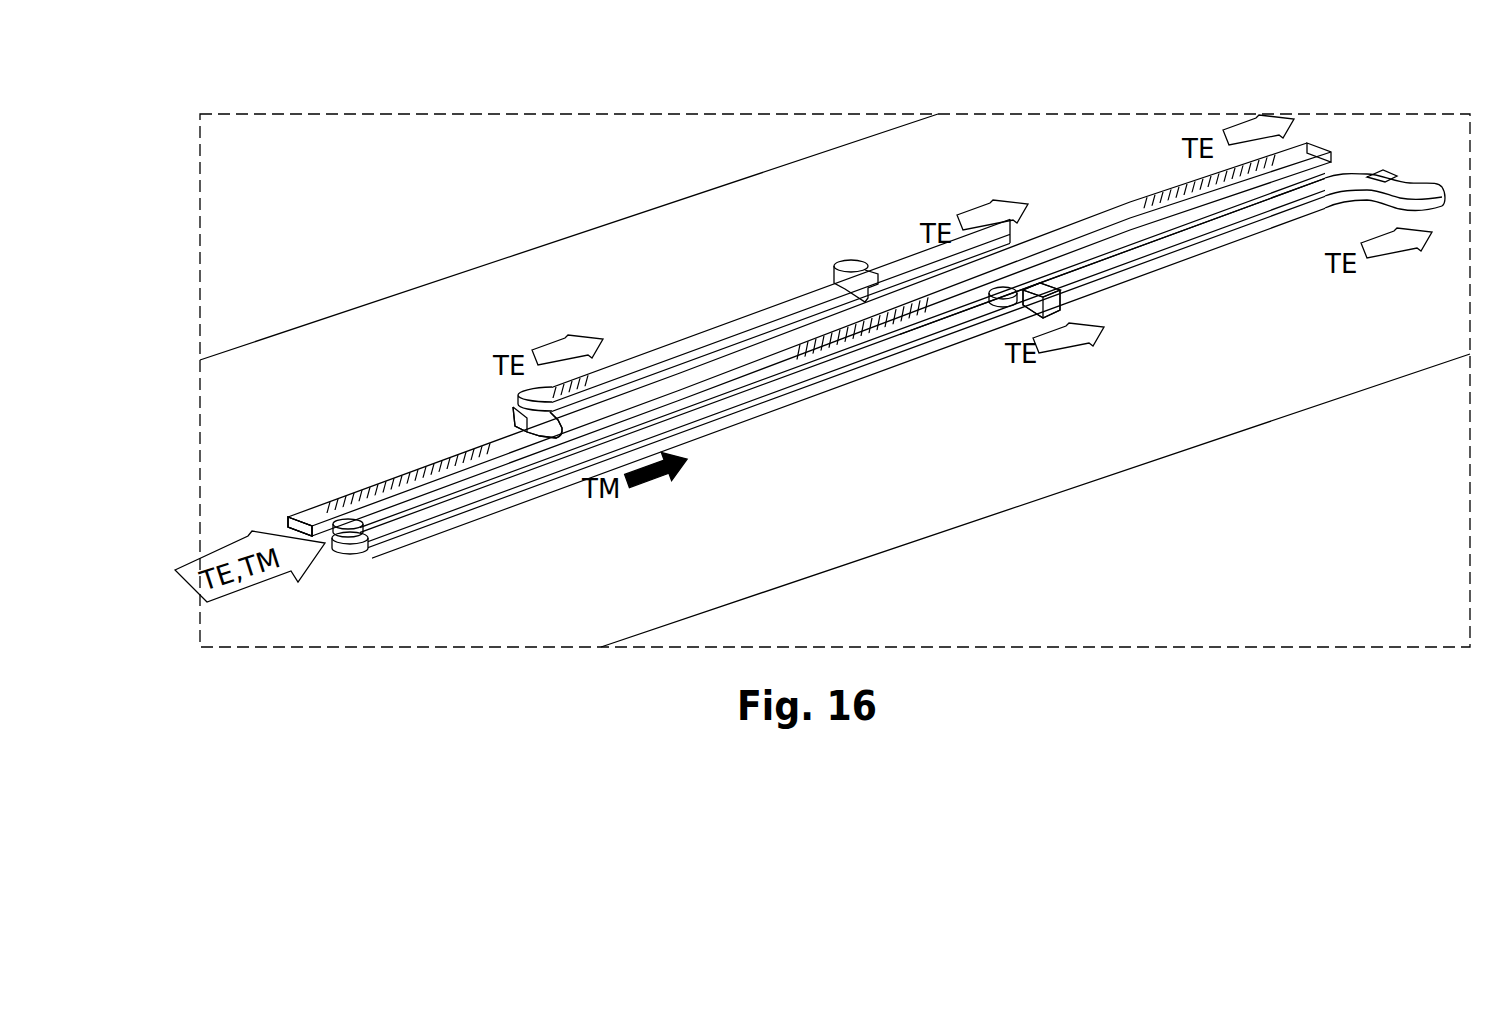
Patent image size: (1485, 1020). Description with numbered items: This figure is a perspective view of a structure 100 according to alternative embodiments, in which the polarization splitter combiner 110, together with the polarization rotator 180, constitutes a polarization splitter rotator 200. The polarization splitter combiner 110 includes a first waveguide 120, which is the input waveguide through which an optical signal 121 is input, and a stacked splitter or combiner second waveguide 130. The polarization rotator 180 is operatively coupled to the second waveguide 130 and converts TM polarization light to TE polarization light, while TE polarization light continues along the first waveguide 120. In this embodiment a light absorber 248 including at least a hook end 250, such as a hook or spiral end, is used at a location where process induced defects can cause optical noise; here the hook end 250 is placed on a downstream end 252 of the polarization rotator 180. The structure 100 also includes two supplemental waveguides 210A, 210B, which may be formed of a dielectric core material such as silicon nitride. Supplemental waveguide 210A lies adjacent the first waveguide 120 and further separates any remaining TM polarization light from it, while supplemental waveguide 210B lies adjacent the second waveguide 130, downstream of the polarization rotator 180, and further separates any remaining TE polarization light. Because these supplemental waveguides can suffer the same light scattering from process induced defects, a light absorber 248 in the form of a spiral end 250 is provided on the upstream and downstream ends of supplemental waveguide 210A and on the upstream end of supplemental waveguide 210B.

The structure 100 is at (280, 514).
The polarization splitter rotator 200 is at (280, 514).
The polarization splitter combiner 110 is at (500, 500).
The first waveguide 120 is at (362, 494).
The optical signal 121 is at (298, 582).
The second waveguide 130 is at (557, 477).
The polarization rotator 180 is at (840, 325).
The supplemental waveguide 210A is at (805, 307).
The supplemental waveguide 210B is at (1257, 200).
The light absorber 248 is at (873, 275).
The hook end 250 is at (847, 262).
The downstream end 252 is at (952, 322).